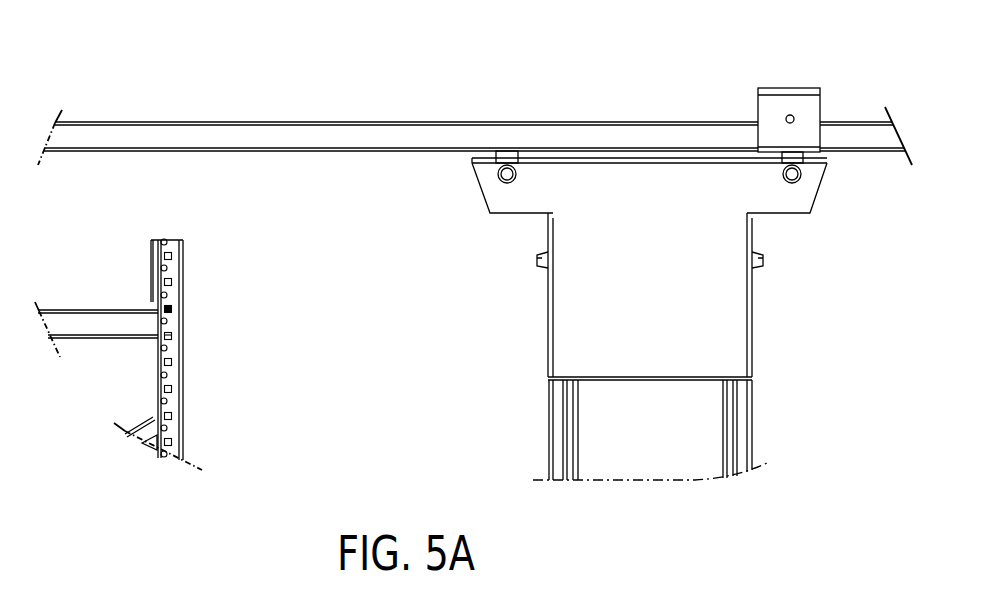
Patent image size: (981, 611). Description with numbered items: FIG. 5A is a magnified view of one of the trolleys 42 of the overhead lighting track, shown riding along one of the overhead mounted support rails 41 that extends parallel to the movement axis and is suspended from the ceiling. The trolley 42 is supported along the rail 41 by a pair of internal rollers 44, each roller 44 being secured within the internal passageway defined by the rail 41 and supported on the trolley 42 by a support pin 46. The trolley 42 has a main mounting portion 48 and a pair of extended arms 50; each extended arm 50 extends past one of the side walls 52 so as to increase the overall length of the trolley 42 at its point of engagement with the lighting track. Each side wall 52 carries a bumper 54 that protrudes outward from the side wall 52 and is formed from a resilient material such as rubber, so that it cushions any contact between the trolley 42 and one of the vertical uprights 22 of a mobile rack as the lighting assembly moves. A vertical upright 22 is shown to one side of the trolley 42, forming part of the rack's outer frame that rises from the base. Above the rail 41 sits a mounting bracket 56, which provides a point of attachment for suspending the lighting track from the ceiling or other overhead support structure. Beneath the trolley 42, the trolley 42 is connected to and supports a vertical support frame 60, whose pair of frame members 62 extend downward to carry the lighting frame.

The vertical upright 22 is at (180, 267).
The support rail 41 is at (300, 133).
The trolley 42 is at (634, 190).
The internal roller 44 is at (506, 160).
The support pin 46 is at (500, 180).
The main mounting portion 48 is at (740, 318).
The extended arm 50 is at (500, 200).
The side wall 52 is at (548, 323).
The bumper 54 is at (540, 260).
The mounting bracket 56 is at (812, 108).
The vertical support frame 60 is at (542, 433).
The frame member 62 is at (563, 447).